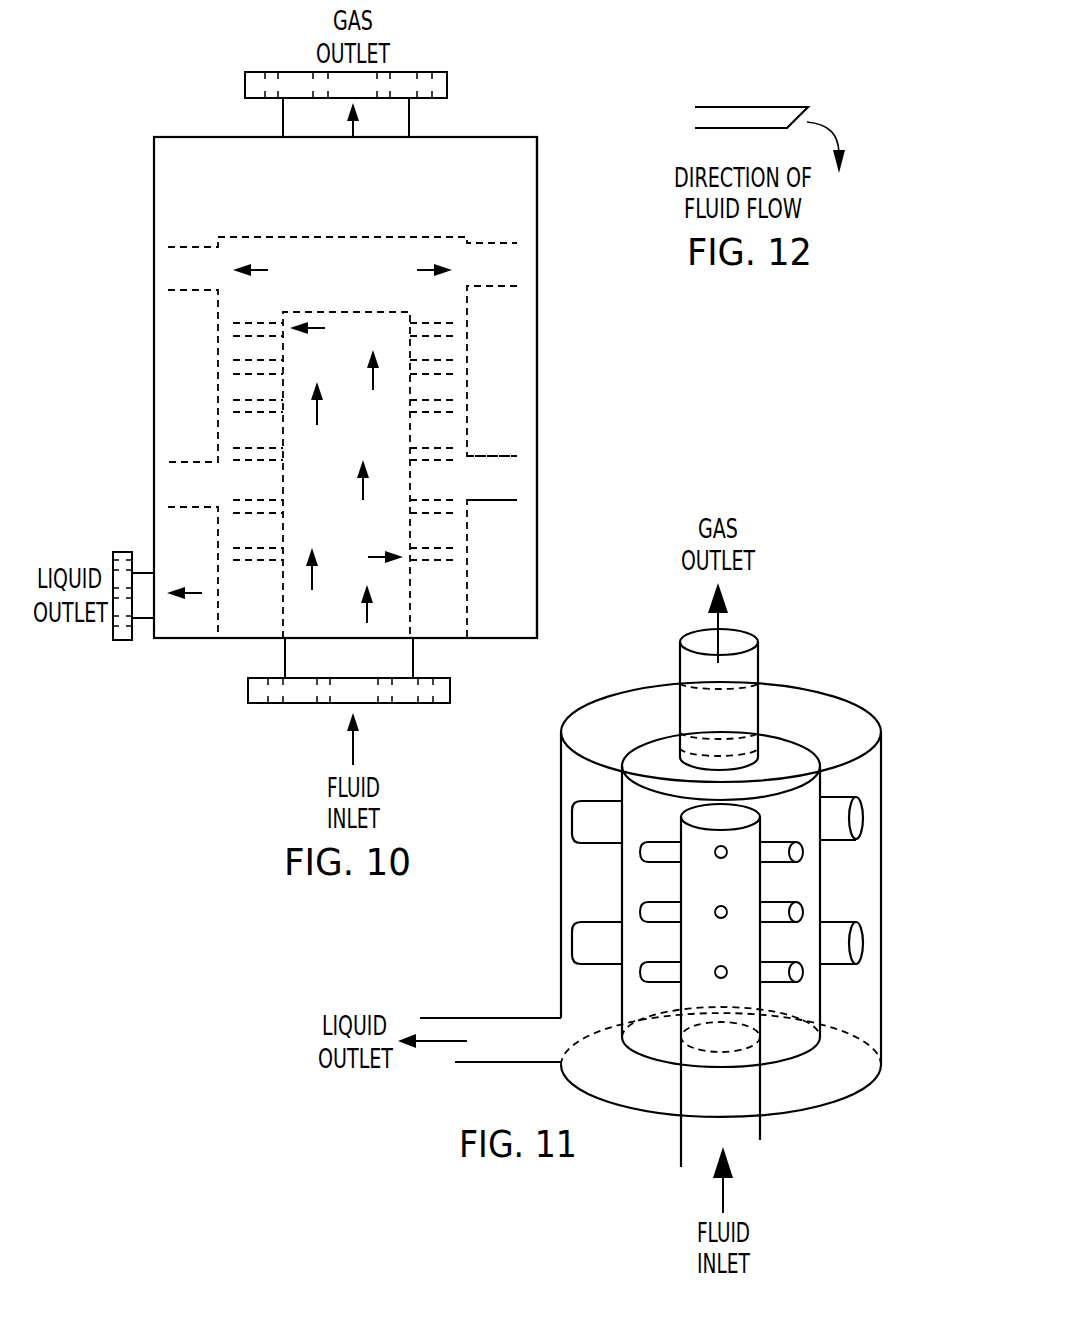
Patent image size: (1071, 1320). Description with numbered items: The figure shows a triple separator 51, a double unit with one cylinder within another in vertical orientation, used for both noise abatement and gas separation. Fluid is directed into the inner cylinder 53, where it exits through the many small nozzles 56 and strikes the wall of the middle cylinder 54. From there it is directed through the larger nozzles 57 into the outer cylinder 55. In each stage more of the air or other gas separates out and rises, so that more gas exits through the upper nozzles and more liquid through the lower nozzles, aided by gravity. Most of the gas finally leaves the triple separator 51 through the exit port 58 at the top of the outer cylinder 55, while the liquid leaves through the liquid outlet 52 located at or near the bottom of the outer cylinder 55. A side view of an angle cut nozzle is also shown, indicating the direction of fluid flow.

In FIG. 10, the triple separator 51 is at (126, 274).
In FIG. 11, the triple separator 51 is at (816, 665).
In FIG. 11, the liquid outlet 52 is at (515, 1017).
In FIG. 11, the inner cylinder 53 is at (737, 956).
In FIG. 10, the middle cylinder 54 is at (346, 285).
In FIG. 11, the middle cylinder 54 is at (656, 828).
In FIG. 10, the outer cylinder 55 is at (538, 413).
In FIG. 11, the outer cylinder 55 is at (562, 892).
In FIG. 10, the small nozzles 56 is at (447, 366).
In FIG. 11, the small nozzles 56 is at (800, 912).
In FIG. 10, the larger nozzles 57 is at (518, 476).
In FIG. 11, the larger nozzles 57 is at (858, 818).
In FIG. 10, the exit port 58 is at (376, 137).
In FIG. 11, the exit port 58 is at (712, 760).